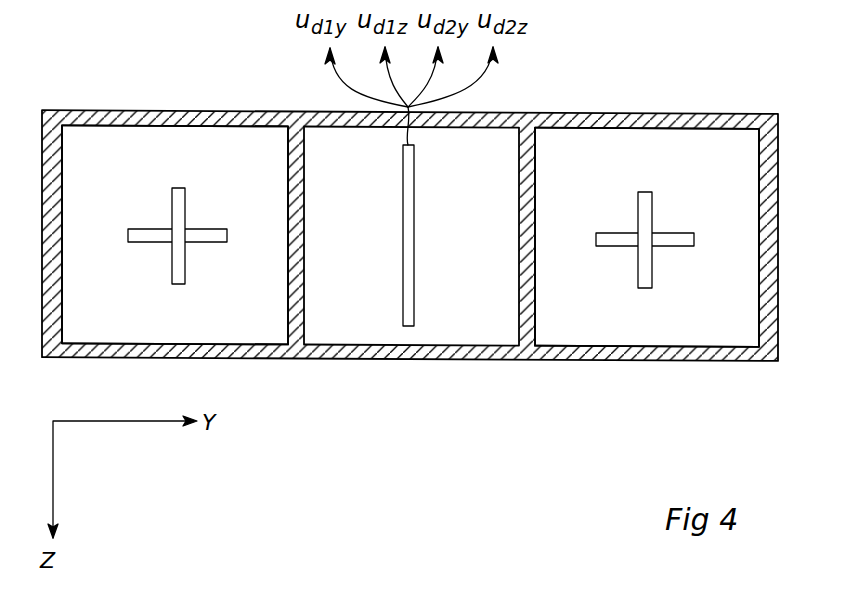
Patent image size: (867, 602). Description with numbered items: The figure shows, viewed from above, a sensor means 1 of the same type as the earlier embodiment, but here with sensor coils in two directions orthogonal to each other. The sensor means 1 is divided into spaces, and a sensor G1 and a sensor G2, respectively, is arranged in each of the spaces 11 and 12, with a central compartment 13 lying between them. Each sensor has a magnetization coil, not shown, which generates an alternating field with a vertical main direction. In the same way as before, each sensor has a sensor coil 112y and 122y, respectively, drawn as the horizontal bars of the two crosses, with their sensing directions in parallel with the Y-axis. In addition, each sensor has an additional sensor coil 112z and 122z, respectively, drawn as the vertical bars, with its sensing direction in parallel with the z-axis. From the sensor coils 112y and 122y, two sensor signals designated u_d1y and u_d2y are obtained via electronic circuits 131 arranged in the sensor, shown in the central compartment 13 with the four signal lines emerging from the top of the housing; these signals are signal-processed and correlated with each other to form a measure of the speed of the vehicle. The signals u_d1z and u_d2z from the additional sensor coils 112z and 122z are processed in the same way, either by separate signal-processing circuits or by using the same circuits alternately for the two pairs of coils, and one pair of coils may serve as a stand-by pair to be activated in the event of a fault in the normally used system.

The sensor means 1 is at (560, 73).
The space 11 is at (257, 325).
The space 12 is at (558, 323).
The coupling cavity 13 is at (462, 325).
The electronic circuits 131 is at (414, 230).
The sensor coil 112y is at (166, 267).
The additional sensor coil 112z is at (205, 228).
The sensor coil 122y is at (652, 270).
The additional sensor coil 122z is at (677, 232).
The sensor G1 is at (227, 162).
The sensor G2 is at (701, 147).